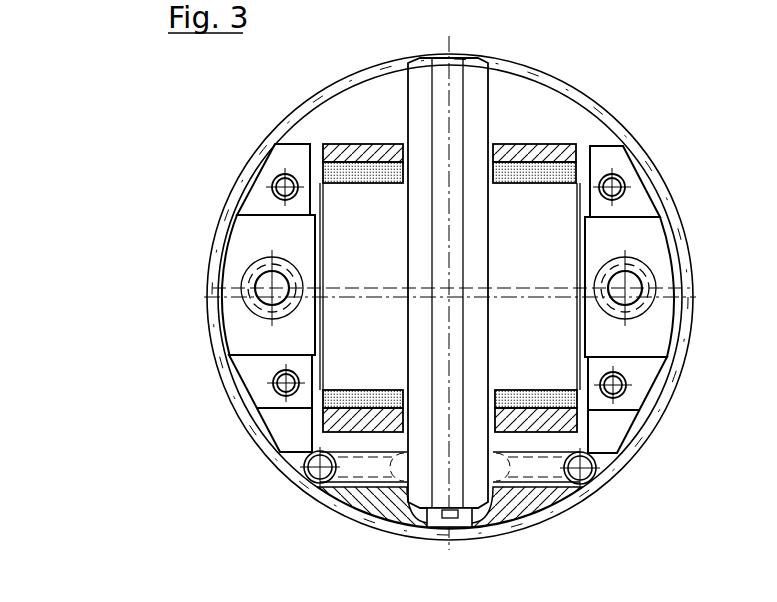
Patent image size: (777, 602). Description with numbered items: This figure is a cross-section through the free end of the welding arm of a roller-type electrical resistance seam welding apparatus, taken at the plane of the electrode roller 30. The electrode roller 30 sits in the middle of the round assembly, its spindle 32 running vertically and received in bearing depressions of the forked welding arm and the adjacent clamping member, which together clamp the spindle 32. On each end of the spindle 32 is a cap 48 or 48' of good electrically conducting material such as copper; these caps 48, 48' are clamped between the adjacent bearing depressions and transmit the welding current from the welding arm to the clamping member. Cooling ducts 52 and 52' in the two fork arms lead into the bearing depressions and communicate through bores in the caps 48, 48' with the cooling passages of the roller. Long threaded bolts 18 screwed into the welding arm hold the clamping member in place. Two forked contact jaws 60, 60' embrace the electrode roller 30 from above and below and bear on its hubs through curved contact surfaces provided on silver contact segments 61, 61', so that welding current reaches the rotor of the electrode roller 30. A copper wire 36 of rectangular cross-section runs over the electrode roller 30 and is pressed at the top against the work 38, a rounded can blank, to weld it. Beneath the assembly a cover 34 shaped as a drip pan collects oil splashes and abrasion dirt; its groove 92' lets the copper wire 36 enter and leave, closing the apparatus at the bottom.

The electrode roller 30 is at (374, 122).
The spindle 32 is at (252, 344).
The cover 34 is at (348, 508).
The copper wire 36 is at (455, 51).
The work 38 is at (638, 147).
The threaded bolts 18 is at (276, 183).
The cap 48 is at (659, 306).
The cap 48' is at (242, 306).
The cooling duct 52 is at (662, 275).
The cooling duct 52' is at (232, 273).
The contact jaw 60 is at (499, 101).
The silver contact segment 61 is at (499, 136).
The contact jaw 60' is at (493, 469).
The silver contact segment 61' is at (528, 478).
The groove 92' is at (507, 536).